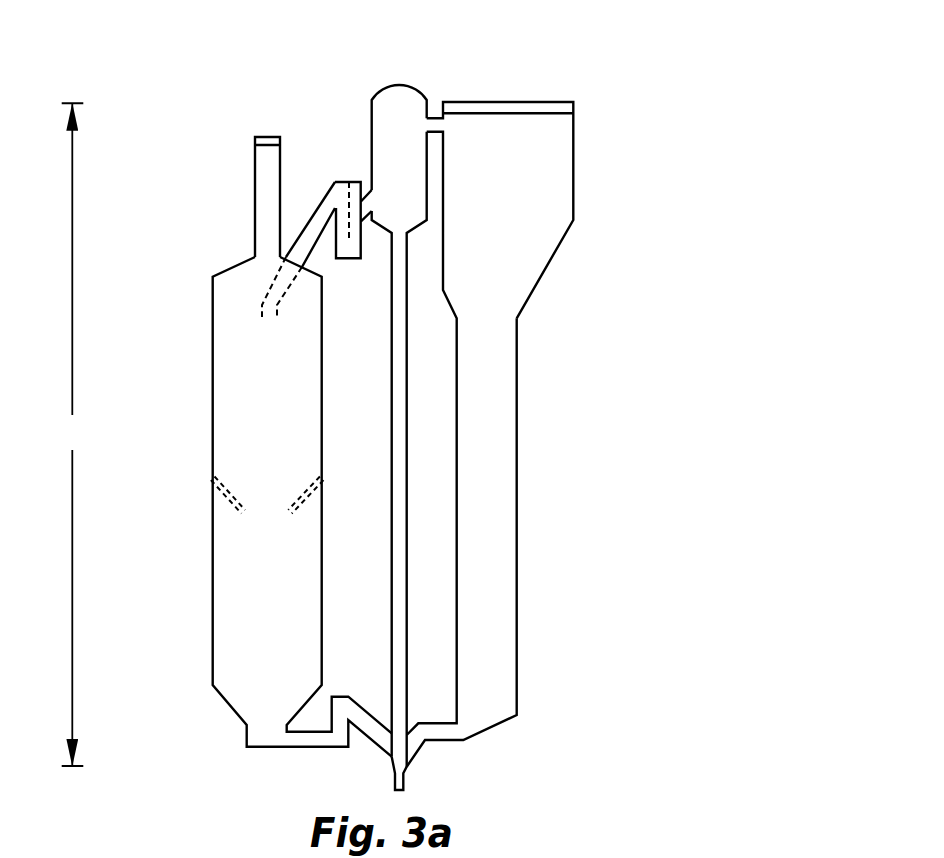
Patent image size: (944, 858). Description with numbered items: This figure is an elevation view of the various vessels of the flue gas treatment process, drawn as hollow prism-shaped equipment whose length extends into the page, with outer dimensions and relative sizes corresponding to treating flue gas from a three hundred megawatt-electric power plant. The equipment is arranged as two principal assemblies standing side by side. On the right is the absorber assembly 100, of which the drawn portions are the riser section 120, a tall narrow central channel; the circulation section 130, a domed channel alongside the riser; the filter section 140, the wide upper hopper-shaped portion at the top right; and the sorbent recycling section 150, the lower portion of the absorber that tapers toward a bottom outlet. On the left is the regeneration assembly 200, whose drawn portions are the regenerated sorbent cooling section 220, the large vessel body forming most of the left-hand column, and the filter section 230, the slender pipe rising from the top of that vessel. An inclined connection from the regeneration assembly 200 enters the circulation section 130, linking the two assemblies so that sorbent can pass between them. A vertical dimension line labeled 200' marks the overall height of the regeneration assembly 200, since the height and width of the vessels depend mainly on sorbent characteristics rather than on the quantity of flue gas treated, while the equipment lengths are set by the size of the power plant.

The absorber assembly 100 is at (550, 60).
The riser section 120 is at (410, 425).
The circulation section 130 is at (400, 122).
The filter section 140 is at (582, 165).
The sorbent recycling section 150 is at (528, 646).
The regeneration assembly 200 is at (263, 190).
The overall height dimension 200' is at (74, 434).
The regenerated sorbent cooling section 220 is at (248, 650).
The filter section 230 is at (253, 218).